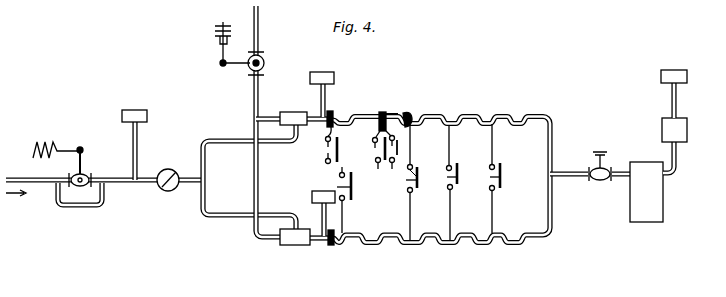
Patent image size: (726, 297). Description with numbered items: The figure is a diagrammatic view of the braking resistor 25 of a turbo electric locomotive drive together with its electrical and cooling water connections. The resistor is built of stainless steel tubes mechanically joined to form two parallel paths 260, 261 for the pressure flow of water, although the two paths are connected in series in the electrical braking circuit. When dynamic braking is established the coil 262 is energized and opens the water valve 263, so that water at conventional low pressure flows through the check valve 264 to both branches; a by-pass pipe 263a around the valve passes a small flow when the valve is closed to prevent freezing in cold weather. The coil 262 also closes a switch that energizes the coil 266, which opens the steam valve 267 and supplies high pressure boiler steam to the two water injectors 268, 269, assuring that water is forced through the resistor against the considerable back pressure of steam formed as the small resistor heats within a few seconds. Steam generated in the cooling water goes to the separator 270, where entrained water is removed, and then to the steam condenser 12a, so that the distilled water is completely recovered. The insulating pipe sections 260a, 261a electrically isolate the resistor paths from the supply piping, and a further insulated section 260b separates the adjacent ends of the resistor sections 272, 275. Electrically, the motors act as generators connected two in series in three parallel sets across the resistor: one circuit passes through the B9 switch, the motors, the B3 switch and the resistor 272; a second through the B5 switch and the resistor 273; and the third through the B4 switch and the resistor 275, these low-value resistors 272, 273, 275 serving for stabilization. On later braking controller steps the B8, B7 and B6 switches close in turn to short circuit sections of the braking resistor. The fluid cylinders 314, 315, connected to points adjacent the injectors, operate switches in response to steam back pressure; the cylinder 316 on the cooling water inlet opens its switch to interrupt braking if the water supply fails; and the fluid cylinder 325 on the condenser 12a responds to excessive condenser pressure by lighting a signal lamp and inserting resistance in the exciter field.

The coil 262 is at (43, 143).
The water valve 263 is at (88, 173).
The by-pass pipe 263a is at (77, 208).
The check valve 264 is at (167, 191).
The coil 266 is at (217, 26).
The steam valve 267 is at (262, 62).
The water injector 268 is at (291, 111).
The water injector 269 is at (300, 246).
The separator 270 is at (652, 210).
The resistor 272 is at (399, 110).
The resistor 273 is at (347, 116).
The resistor 275 is at (381, 111).
The parallel path 260 is at (436, 112).
The section of pipe 260a is at (331, 121).
The electrically insulated section of pipe 260b is at (384, 111).
The parallel path 261 is at (452, 247).
The section of pipe 261a is at (332, 245).
The fluid cylinder 314 is at (312, 196).
The fluid cylinder 315 is at (333, 80).
The cylinder 316 is at (135, 110).
The fluid cylinder 325 is at (673, 73).
The steam condenser 12a is at (665, 125).
The braking resistor 25 is at (478, 213).
The B3 switch B3 is at (406, 180).
The B4 switch B4 is at (383, 148).
The B5 switch B5 is at (335, 153).
The B6 switch B6 is at (496, 180).
The B7 switch B7 is at (455, 177).
The B8 switch B8 is at (418, 186).
The B9 switch B9 is at (351, 194).